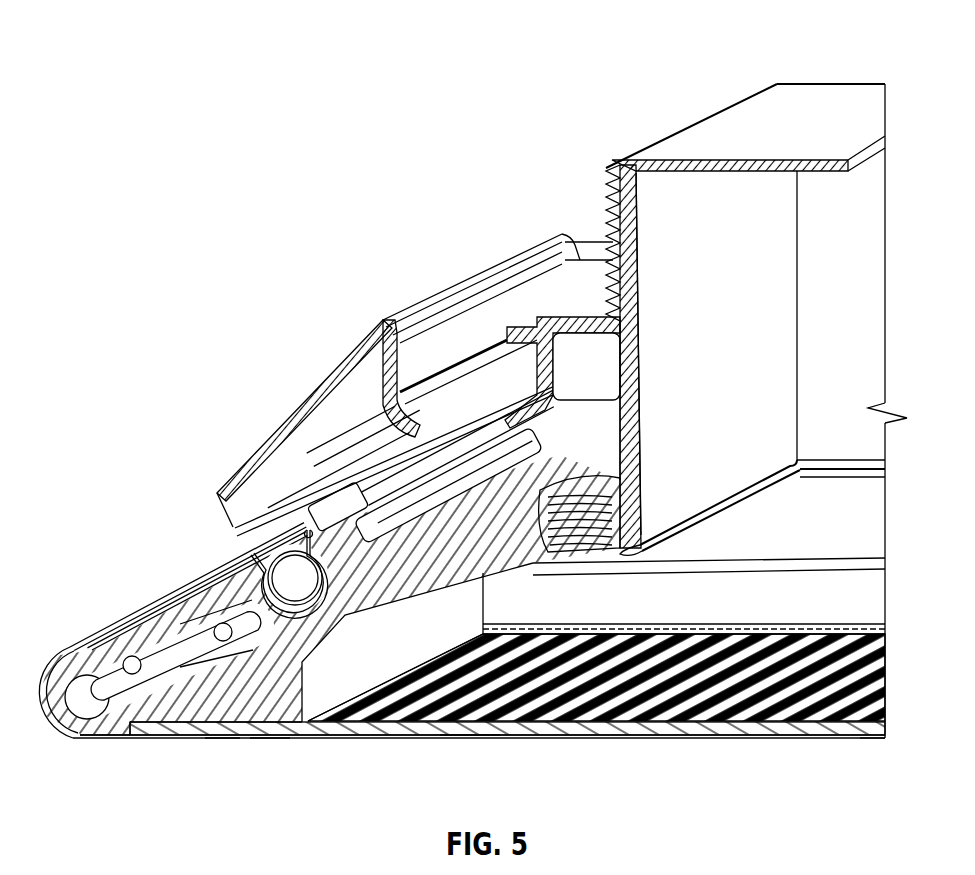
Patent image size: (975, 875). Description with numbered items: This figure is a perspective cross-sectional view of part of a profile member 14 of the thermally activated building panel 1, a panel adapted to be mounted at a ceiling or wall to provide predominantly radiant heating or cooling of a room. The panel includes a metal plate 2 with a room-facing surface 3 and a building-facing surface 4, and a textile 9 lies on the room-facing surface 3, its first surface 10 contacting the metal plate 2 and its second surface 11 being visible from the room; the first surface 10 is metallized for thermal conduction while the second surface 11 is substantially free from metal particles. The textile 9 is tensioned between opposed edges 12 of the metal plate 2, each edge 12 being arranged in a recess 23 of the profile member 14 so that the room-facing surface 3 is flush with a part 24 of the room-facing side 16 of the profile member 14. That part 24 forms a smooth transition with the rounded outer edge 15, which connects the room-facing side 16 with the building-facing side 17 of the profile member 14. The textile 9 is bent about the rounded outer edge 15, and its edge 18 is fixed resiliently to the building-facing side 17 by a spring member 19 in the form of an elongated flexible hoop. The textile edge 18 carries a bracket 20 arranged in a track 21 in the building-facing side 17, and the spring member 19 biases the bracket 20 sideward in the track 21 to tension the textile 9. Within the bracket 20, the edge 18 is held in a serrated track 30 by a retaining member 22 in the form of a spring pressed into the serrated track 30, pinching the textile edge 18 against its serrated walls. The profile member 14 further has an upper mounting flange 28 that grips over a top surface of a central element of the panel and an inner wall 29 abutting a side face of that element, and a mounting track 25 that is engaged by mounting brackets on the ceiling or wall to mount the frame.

The thermally activated building panel 1 is at (210, 363).
The metal plate 2 is at (742, 728).
The room-facing surface 3 is at (869, 742).
The building-facing surface 4 is at (864, 699).
The textile 9 is at (472, 739).
The first surface 10 is at (165, 600).
The second surface 11 is at (267, 743).
The edge 12 is at (133, 729).
The profile member 14 is at (479, 264).
The rounded outer edge 15 is at (45, 712).
The room-facing side 16 is at (222, 744).
The building-facing side 17 is at (213, 528).
The edge 18 is at (176, 598).
The spring member 19 is at (170, 652).
The bracket 20 is at (262, 566).
The track 21 is at (226, 538).
The retaining member 22 is at (300, 530).
The recess 23 is at (210, 726).
The part 24 is at (110, 734).
The mounting track 25 is at (496, 338).
The upper mounting flange 28 is at (808, 103).
The inner wall 29 is at (733, 327).
The serrated track 30 is at (302, 625).